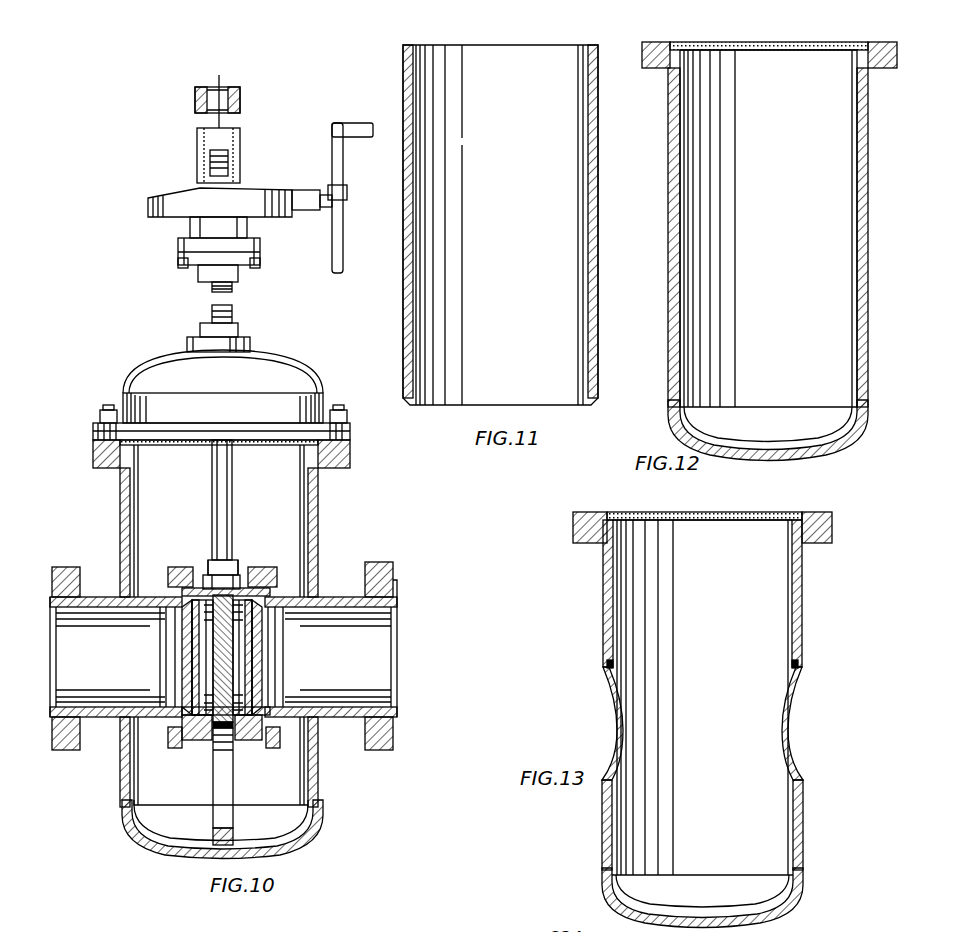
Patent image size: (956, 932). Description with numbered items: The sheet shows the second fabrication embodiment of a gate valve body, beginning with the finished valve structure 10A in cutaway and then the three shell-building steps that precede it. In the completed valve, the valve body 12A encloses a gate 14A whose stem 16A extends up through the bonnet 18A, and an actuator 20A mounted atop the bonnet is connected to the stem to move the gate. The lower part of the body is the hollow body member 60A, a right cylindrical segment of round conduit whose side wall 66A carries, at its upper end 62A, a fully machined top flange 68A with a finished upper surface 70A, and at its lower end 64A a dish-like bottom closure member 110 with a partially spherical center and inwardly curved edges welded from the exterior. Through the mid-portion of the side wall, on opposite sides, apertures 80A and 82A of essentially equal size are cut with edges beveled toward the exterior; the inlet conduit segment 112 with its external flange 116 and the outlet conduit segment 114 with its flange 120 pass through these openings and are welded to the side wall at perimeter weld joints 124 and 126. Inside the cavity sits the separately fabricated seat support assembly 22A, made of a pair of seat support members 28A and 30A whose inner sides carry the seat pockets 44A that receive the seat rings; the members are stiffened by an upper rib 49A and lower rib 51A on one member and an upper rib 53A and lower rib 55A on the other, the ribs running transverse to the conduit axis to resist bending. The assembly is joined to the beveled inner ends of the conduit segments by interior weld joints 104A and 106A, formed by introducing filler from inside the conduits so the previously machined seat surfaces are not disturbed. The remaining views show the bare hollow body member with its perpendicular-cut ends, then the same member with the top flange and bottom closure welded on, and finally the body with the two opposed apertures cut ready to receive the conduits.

In FIG. 10, the valve structure 10A is at (115, 255).
In FIG. 10, the valve body 12A is at (73, 486).
In FIG. 10, the gate 14A is at (230, 795).
In FIG. 10, the stem 16A is at (220, 495).
In FIG. 10, the bonnet 18A is at (270, 362).
In FIG. 10, the actuator 20A is at (233, 195).
In FIG. 10, the seat support assembly 22A is at (238, 562).
In FIG. 10, the seat support member 28A is at (192, 740).
In FIG. 10, the seat support member 30A is at (247, 738).
In FIG. 10, the seat pocket 44A is at (190, 665).
In FIG. 10, the upper rib 49A is at (165, 582).
In FIG. 10, the lower rib 51A is at (130, 765).
In FIG. 10, the upper rib 53A is at (272, 585).
In FIG. 10, the lower rib 55A is at (318, 760).
In FIG. 11, the hollow body member 60A is at (500, 225).
In FIG. 12, the hollow body member 60A is at (768, 228).
In FIG. 13, the hollow body member 60A is at (702, 697).
In FIG. 11, the upper end 62A is at (432, 45).
In FIG. 12, the upper end 62A is at (700, 42).
In FIG. 13, the upper end 62A is at (600, 512).
In FIG. 11, the lower end 64A is at (540, 405).
In FIG. 12, the lower end 64A is at (757, 407).
In FIG. 10, the side wall 66A is at (320, 520).
In FIG. 11, the side wall 66A is at (590, 175).
In FIG. 12, the side wall 66A is at (868, 242).
In FIG. 13, the side wall 66A is at (802, 615).
In FIG. 10, the top flange 68A is at (349, 455).
In FIG. 12, the top flange 68A is at (851, 75).
In FIG. 13, the top flange 68A is at (812, 541).
In FIG. 12, the upper surface 70A is at (652, 70).
In FIG. 13, the aperture 80A is at (617, 725).
In FIG. 13, the aperture 82A is at (790, 710).
In FIG. 10, the weld joint 104A is at (163, 660).
In FIG. 10, the weld joint 106A is at (285, 617).
In FIG. 10, the bottom closure member 110 is at (272, 846).
In FIG. 12, the bottom closure member 110 is at (805, 455).
In FIG. 13, the bottom closure member 110 is at (780, 913).
In FIG. 10, the inlet conduit segment 112 is at (82, 665).
In FIG. 10, the outlet conduit segment 114 is at (363, 657).
In FIG. 10, the flange 116 is at (68, 745).
In FIG. 10, the flange 120 is at (392, 565).
In FIG. 10, the weld joint 124 is at (105, 590).
In FIG. 10, the weld joint 126 is at (332, 592).